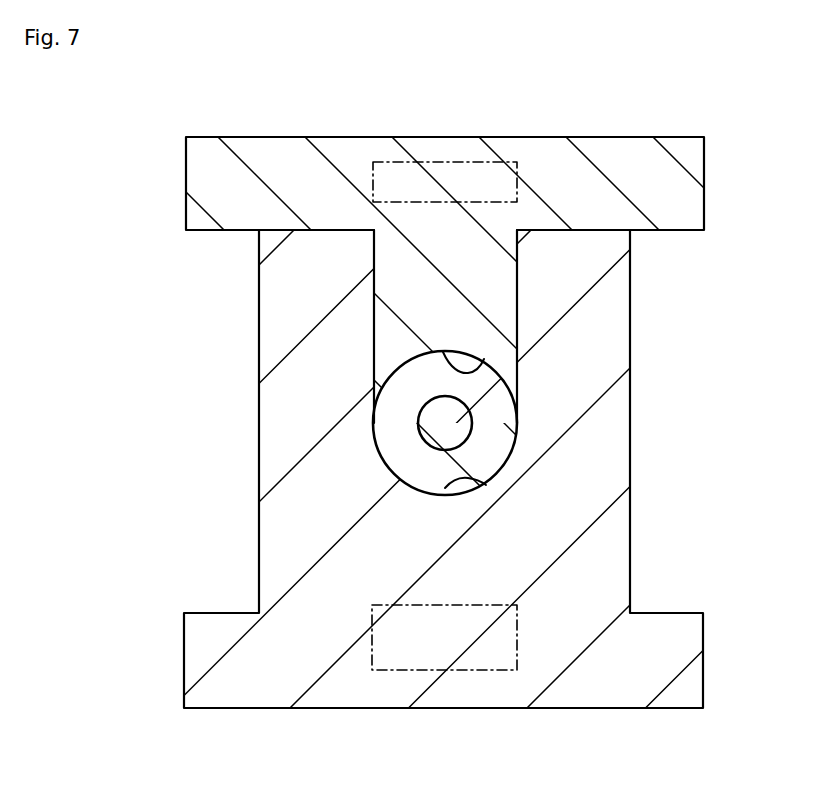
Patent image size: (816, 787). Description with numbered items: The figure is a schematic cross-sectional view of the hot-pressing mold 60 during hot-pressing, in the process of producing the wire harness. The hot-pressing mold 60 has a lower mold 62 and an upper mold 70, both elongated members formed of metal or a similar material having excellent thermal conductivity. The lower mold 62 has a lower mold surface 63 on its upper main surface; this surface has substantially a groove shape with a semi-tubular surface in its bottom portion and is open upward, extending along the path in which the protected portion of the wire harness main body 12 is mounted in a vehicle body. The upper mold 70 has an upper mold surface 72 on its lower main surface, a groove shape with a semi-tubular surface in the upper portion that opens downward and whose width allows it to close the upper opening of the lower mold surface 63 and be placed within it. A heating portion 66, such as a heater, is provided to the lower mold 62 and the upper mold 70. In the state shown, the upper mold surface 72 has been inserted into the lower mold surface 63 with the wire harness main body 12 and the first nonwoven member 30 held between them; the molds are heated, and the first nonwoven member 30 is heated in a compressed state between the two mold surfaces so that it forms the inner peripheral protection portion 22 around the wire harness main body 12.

The hot-pressing mold 60 is at (516, 108).
The upper mold 70 is at (704, 172).
The lower mold 62 is at (703, 660).
The inner peripheral protection portion 22 is at (392, 377).
The first nonwoven member 30 is at (393, 437).
The wire harness main body 12 is at (472, 418).
The upper mold surface 72 is at (470, 360).
The lower mold surface 63 is at (487, 483).
The heating portion 66 is at (428, 160).